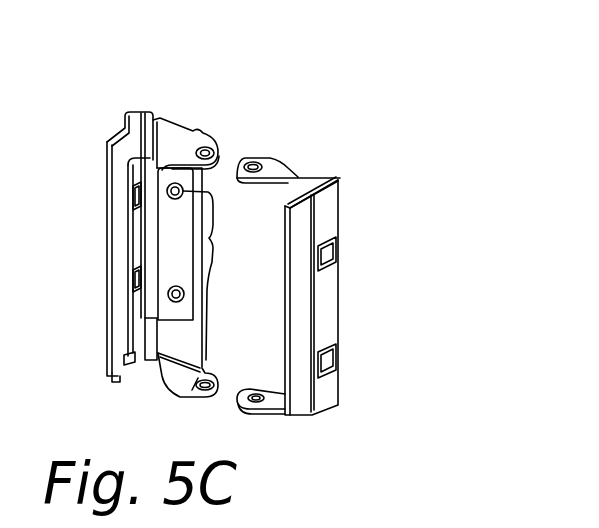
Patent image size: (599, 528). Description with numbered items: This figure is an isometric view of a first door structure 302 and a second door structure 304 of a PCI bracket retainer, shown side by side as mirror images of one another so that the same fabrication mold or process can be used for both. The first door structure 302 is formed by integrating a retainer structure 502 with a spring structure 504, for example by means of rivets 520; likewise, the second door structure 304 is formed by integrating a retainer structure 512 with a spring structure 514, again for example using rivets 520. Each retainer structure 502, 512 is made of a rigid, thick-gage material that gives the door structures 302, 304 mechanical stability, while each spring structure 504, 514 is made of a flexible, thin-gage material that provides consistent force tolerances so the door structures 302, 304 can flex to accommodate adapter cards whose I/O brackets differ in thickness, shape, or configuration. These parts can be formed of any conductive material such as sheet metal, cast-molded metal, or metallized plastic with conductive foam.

The first door structure 302 is at (106, 237).
The second door structure 304 is at (339, 308).
The retainer structure 502 is at (186, 396).
The spring structure 504 is at (113, 382).
The retainer structure 512 is at (307, 190).
The spring structure 514 is at (327, 216).
The rivets 520 is at (215, 242).